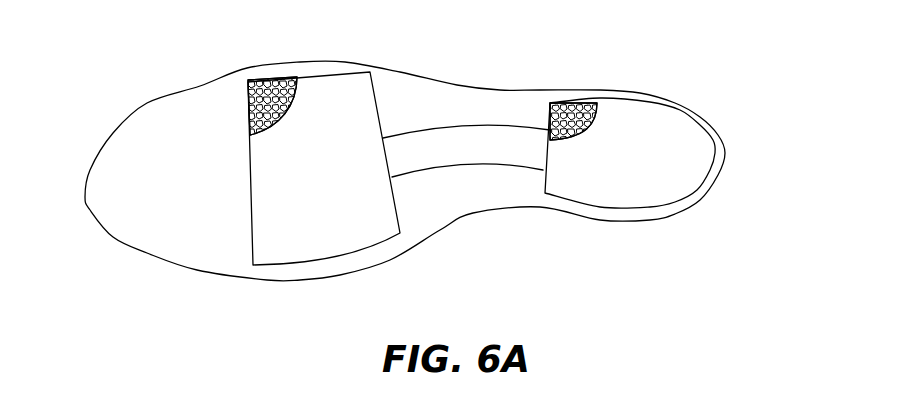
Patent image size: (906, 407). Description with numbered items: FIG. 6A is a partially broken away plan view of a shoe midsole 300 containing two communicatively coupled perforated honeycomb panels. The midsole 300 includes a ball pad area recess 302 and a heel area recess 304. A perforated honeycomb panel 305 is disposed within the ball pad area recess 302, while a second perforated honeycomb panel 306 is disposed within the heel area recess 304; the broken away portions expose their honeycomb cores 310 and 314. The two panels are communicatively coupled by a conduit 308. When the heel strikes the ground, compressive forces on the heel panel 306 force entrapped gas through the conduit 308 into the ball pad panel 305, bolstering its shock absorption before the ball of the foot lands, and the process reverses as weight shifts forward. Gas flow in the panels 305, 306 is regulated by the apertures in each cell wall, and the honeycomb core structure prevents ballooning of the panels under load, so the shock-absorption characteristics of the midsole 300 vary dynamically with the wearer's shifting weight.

The shoe midsole 300 is at (134, 286).
The ball pad area recess 302 is at (328, 262).
The heel area recess 304 is at (655, 208).
The perforated honeycomb panel 305 is at (265, 170).
The second perforated honeycomb panel 306 is at (685, 135).
The conduit 308 is at (468, 137).
The core 310 is at (282, 88).
The core 314 is at (587, 103).